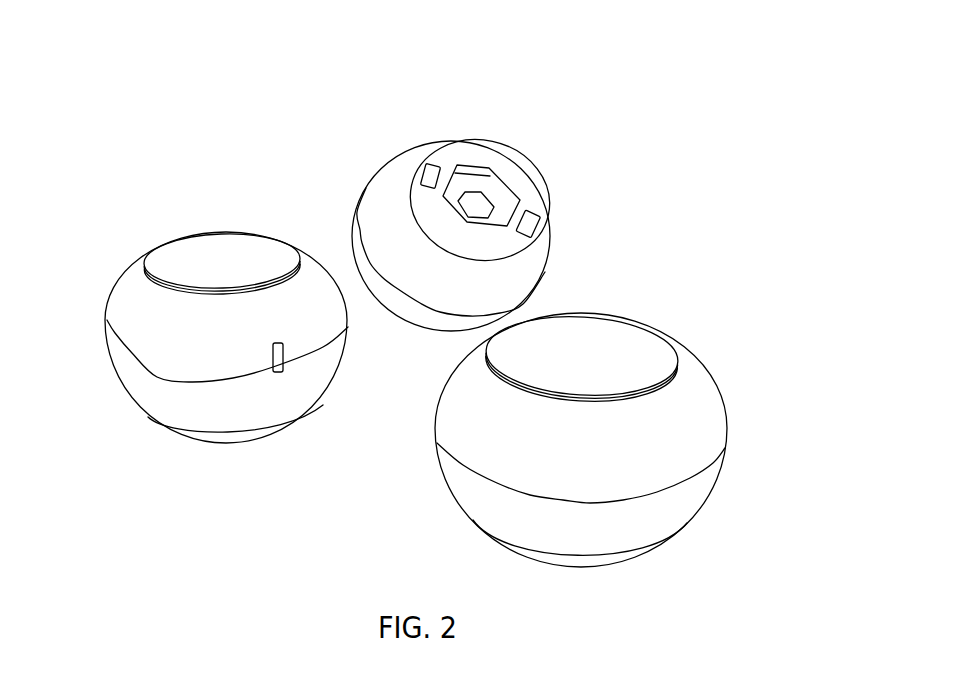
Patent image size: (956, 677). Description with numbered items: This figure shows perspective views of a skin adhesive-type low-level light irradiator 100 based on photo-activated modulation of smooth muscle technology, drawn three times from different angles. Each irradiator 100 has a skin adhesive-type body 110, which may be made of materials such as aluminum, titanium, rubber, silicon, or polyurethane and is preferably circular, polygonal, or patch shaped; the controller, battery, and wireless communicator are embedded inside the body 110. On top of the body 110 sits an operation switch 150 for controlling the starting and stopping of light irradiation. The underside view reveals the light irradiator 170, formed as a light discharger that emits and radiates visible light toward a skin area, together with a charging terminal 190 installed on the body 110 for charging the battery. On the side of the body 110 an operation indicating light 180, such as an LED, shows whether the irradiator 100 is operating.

The skin adhesive-type low-level light irradiator 100 is at (146, 219).
The skin adhesive-type body 110 is at (127, 318).
The operation switch 150 is at (218, 253).
The light irradiator 170 is at (463, 193).
The operation indicating light 180 is at (278, 362).
The charging terminal 190 is at (439, 163).